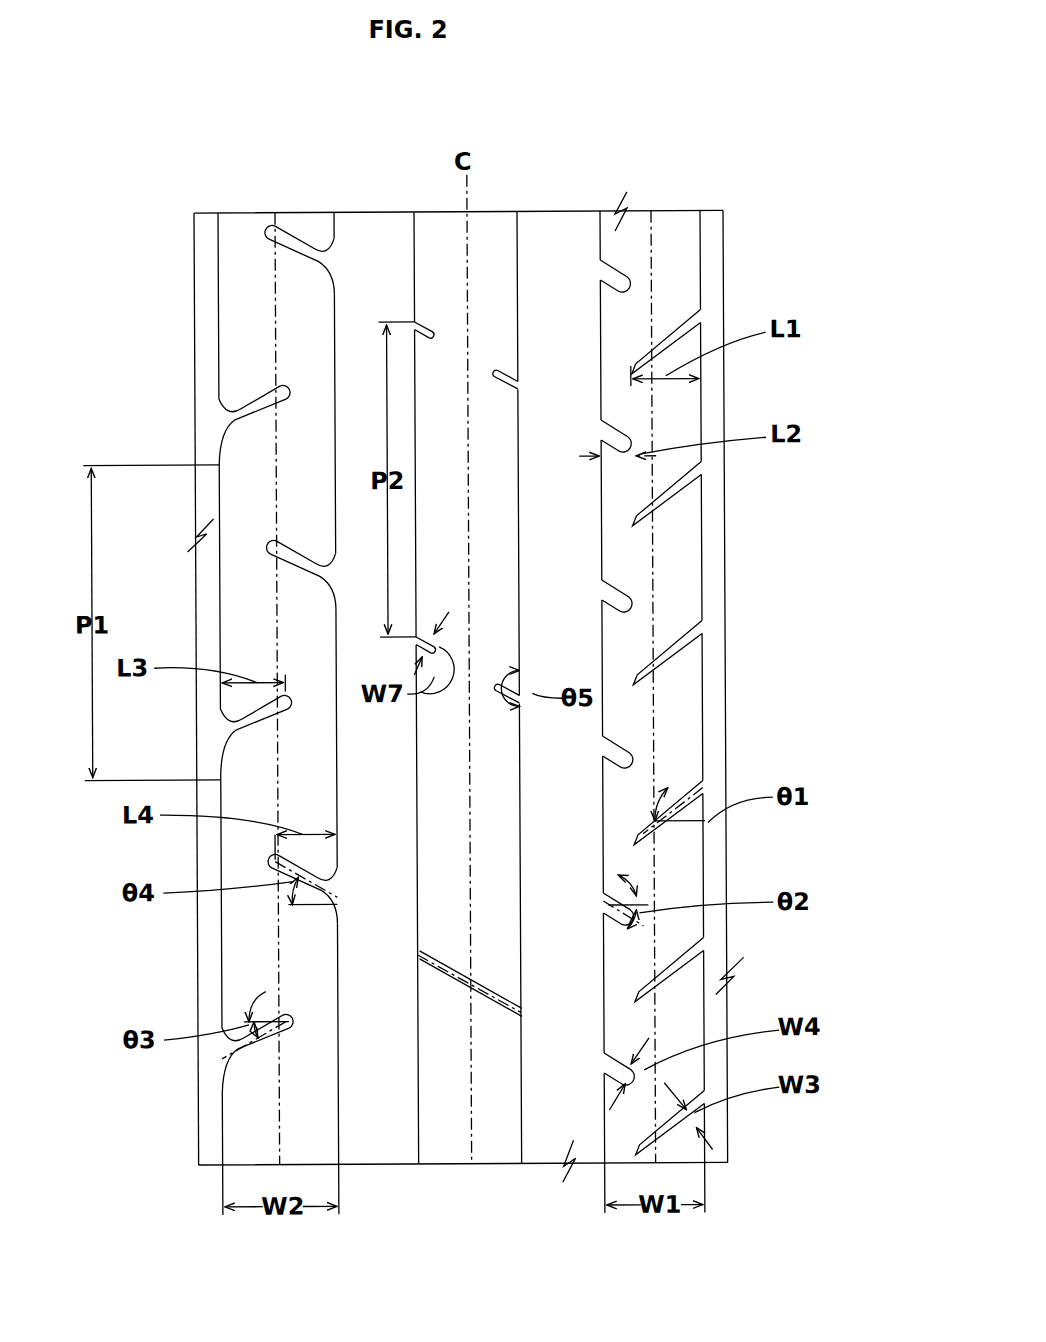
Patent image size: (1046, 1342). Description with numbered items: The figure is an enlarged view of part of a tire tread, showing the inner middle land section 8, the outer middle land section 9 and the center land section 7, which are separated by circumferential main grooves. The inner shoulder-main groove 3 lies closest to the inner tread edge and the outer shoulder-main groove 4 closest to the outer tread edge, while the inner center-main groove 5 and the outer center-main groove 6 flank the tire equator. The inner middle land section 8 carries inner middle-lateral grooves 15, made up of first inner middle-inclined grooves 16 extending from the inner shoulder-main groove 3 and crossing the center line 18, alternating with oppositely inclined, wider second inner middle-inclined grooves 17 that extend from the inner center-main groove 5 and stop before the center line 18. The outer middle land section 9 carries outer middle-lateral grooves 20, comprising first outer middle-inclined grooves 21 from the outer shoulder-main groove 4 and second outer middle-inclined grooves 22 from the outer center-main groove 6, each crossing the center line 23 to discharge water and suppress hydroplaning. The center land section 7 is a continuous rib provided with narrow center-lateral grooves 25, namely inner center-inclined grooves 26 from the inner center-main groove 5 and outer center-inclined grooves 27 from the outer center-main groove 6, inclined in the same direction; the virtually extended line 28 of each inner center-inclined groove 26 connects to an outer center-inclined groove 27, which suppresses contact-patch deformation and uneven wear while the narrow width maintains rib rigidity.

The inner shoulder-main groove 3 is at (710, 243).
The outer shoulder-main groove 4 is at (207, 243).
The inner center-main groove 5 is at (553, 243).
The outer center-main groove 6 is at (352, 243).
The center land section 7 is at (495, 243).
The inner middle land section 8 is at (669, 243).
The outer middle land section 9 is at (254, 243).
The inner middle-lateral grooves 15 is at (810, 505).
The first inner middle-inclined groove 16 is at (678, 318).
The second inner middle-inclined groove 17 is at (636, 436).
The center line 18 is at (650, 295).
The outer middle-lateral grooves 20 is at (108, 305).
The first outer middle-inclined groove 21 is at (257, 405).
The second outer middle-inclined groove 22 is at (296, 254).
The center line 23 is at (265, 460).
The center-lateral grooves 25 is at (438, 691).
The inner center-inclined groove 26 is at (505, 370).
The outer center-inclined groove 27 is at (420, 322).
The virtually extended line 28 is at (461, 978).